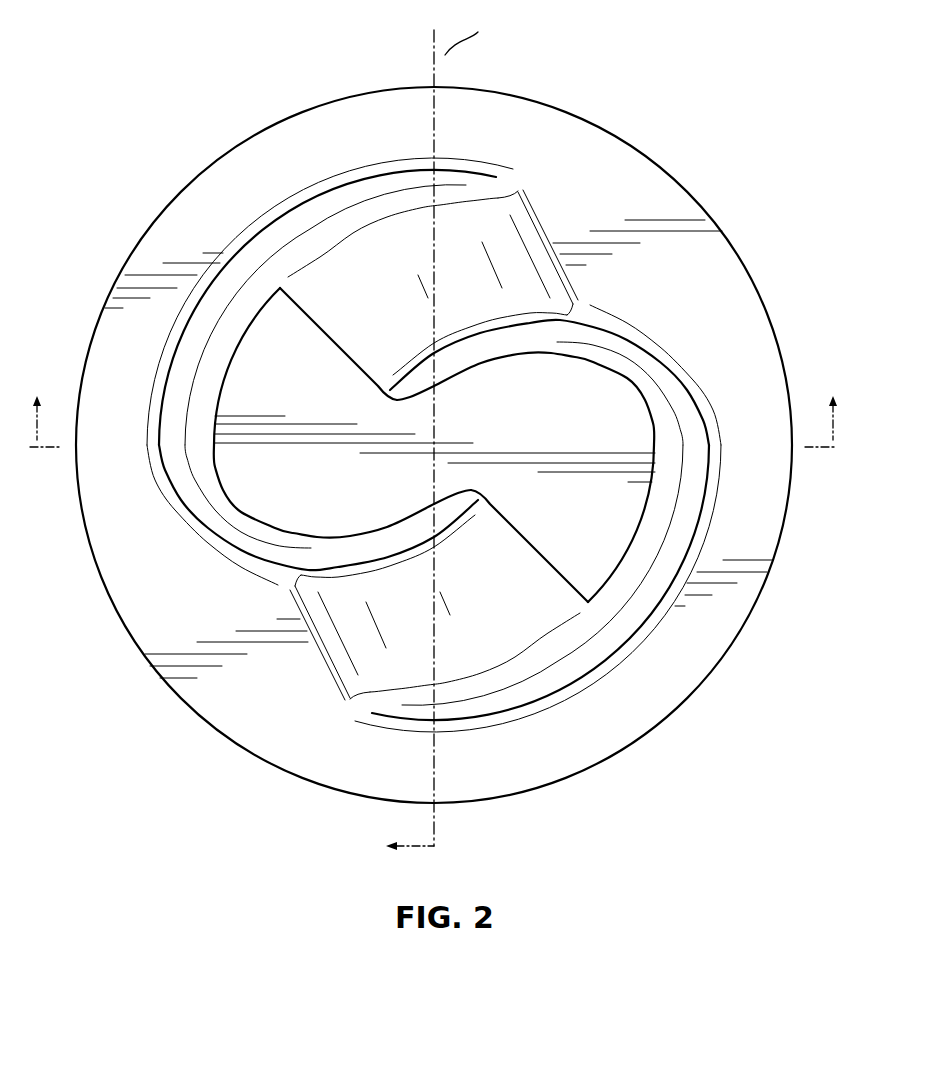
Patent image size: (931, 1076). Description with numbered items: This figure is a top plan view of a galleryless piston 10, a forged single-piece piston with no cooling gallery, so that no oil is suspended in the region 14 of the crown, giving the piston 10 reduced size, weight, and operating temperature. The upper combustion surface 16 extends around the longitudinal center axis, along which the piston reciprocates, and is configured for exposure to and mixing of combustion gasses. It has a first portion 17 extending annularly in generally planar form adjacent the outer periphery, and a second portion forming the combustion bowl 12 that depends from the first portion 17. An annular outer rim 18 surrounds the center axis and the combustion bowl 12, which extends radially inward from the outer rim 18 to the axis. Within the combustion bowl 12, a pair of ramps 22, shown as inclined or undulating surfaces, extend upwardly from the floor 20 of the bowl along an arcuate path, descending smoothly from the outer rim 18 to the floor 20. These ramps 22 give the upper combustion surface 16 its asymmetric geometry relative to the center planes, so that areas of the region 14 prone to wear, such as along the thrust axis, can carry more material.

The galleryless piston 10 is at (674, 89).
The combustion bowl 12 is at (229, 402).
The region of the piston crown 14 is at (716, 751).
The upper combustion surface 16 is at (632, 402).
The first portion 17 is at (208, 197).
The outer rim 18 is at (632, 641).
The floor 20 is at (260, 347).
The ramps 22 is at (493, 223).